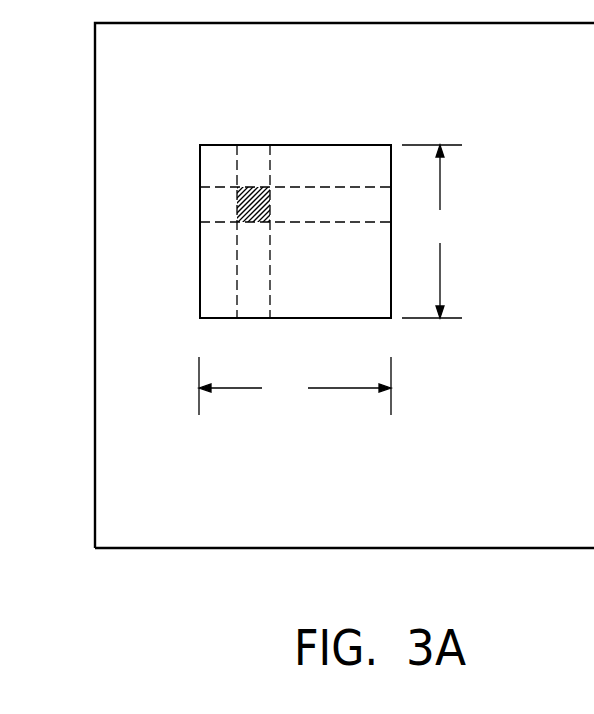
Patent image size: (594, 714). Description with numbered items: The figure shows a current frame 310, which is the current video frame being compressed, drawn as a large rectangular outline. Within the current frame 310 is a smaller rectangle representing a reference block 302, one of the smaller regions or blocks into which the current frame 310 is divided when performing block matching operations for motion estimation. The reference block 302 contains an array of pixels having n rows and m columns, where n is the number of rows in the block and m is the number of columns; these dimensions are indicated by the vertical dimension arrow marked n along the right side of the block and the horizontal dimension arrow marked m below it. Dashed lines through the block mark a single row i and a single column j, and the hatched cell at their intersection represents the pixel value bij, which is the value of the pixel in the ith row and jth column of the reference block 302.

The reference block 302 is at (319, 255).
The current frame 310 is at (228, 549).
The pixel value bij is at (272, 203).
The row index i is at (283, 204).
The column index j is at (253, 212).
The number of columns m is at (295, 386).
The number of rows n is at (432, 231).